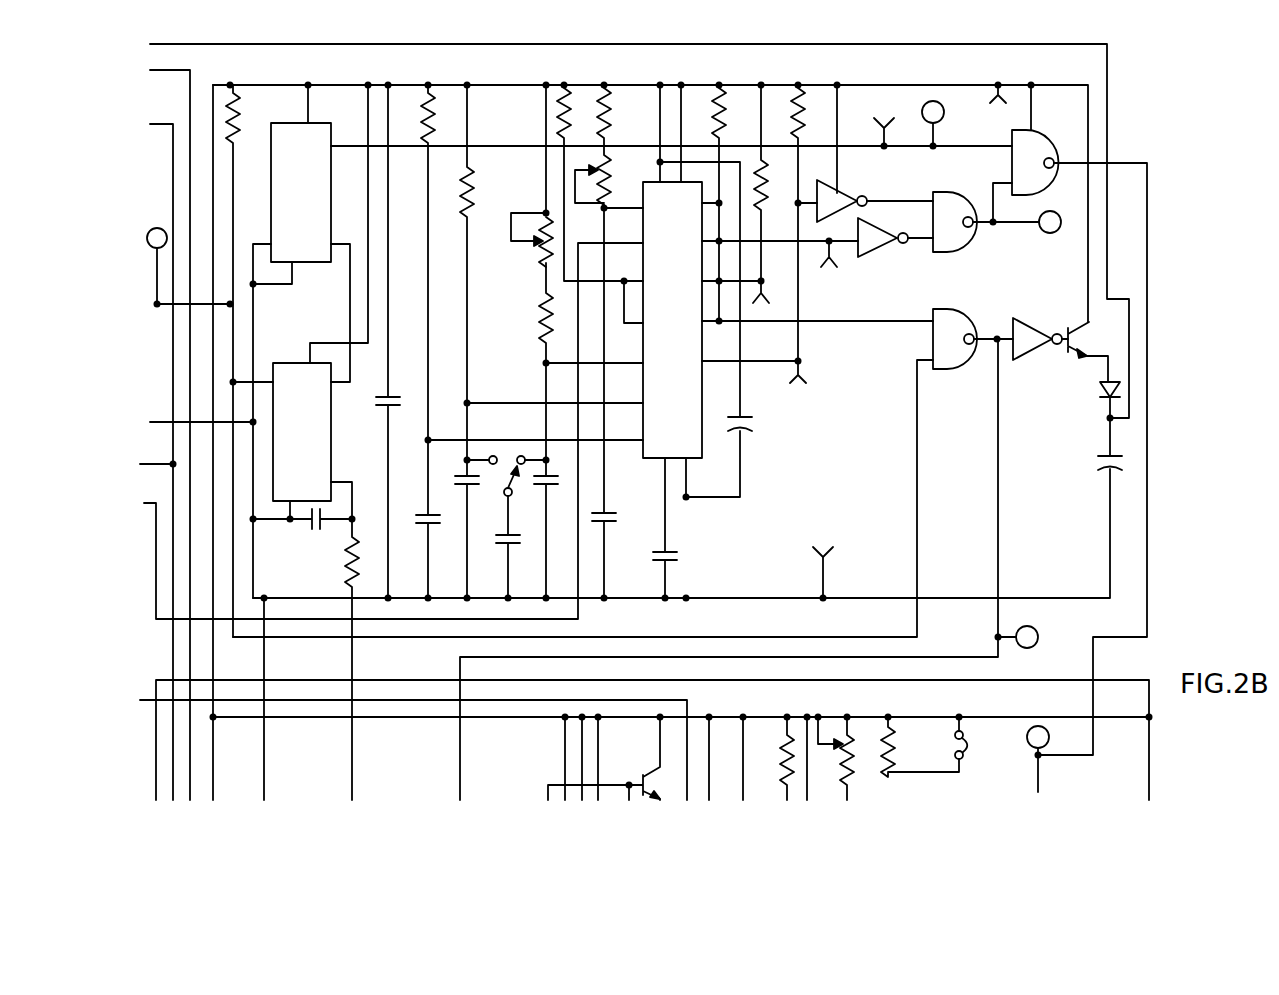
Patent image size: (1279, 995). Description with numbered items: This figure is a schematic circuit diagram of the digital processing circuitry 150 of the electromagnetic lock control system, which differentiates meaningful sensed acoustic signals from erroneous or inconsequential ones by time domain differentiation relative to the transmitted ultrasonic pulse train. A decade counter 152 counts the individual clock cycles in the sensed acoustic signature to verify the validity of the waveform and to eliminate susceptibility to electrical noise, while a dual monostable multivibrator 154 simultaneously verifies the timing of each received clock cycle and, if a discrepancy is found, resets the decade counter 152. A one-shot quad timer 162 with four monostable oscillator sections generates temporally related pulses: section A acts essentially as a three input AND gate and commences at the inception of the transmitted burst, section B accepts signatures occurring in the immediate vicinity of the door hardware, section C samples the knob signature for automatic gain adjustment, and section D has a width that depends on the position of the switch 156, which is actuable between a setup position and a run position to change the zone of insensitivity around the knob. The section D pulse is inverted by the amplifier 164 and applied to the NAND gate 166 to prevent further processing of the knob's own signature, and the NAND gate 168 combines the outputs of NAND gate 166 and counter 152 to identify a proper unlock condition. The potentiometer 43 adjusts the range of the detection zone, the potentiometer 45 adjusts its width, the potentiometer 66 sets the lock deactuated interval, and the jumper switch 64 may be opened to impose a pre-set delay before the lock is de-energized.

The digital processing circuitry 150 is at (444, 74).
The decade counter 152 is at (303, 247).
The dual monostable multivibrator 154 is at (308, 445).
The switch 156 is at (513, 470).
The one-shot quad timer 162 is at (705, 445).
The amplifier 164 is at (847, 190).
The NAND gate 166 is at (942, 192).
The NAND gate 168 is at (1032, 145).
The potentiometer 43 is at (611, 176).
The potentiometer 45 is at (520, 243).
The potentiometer 66 is at (818, 728).
The jumper switch 64 is at (963, 752).